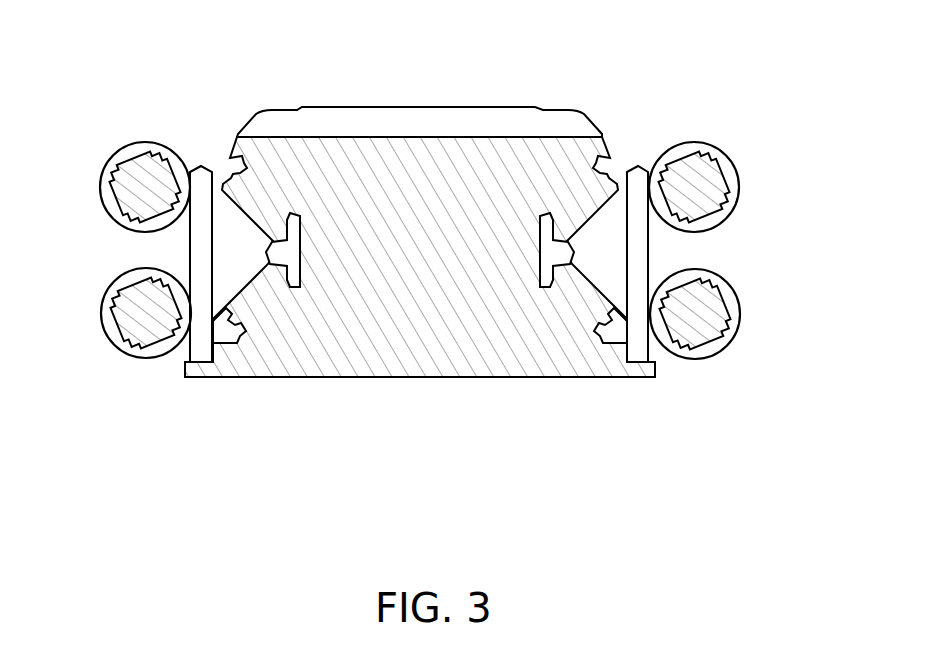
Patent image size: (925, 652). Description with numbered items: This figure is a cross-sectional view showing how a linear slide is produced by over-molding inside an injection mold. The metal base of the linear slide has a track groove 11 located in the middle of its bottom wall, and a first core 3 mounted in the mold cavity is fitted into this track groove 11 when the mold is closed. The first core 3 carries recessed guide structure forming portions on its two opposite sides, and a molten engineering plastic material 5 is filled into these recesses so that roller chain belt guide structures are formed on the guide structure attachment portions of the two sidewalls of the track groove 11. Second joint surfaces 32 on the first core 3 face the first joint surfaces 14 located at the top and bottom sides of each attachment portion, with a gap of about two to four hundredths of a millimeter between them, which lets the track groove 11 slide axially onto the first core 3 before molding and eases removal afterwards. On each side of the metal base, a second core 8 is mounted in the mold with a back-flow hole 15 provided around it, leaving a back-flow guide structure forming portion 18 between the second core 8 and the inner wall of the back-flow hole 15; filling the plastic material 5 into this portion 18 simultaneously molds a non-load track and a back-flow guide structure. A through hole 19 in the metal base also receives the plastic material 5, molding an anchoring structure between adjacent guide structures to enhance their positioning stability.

The first core 3 is at (340, 325).
The molten engineering plastic material 5 is at (194, 166).
The second core 8 is at (135, 186).
The track groove 11 is at (358, 118).
The first joint surface 14 is at (628, 200).
The back-flow hole 15 is at (112, 152).
The back-flow guide structure forming portion 18 is at (137, 140).
The through hole 19 is at (203, 342).
The second joint surface 32 is at (587, 215).